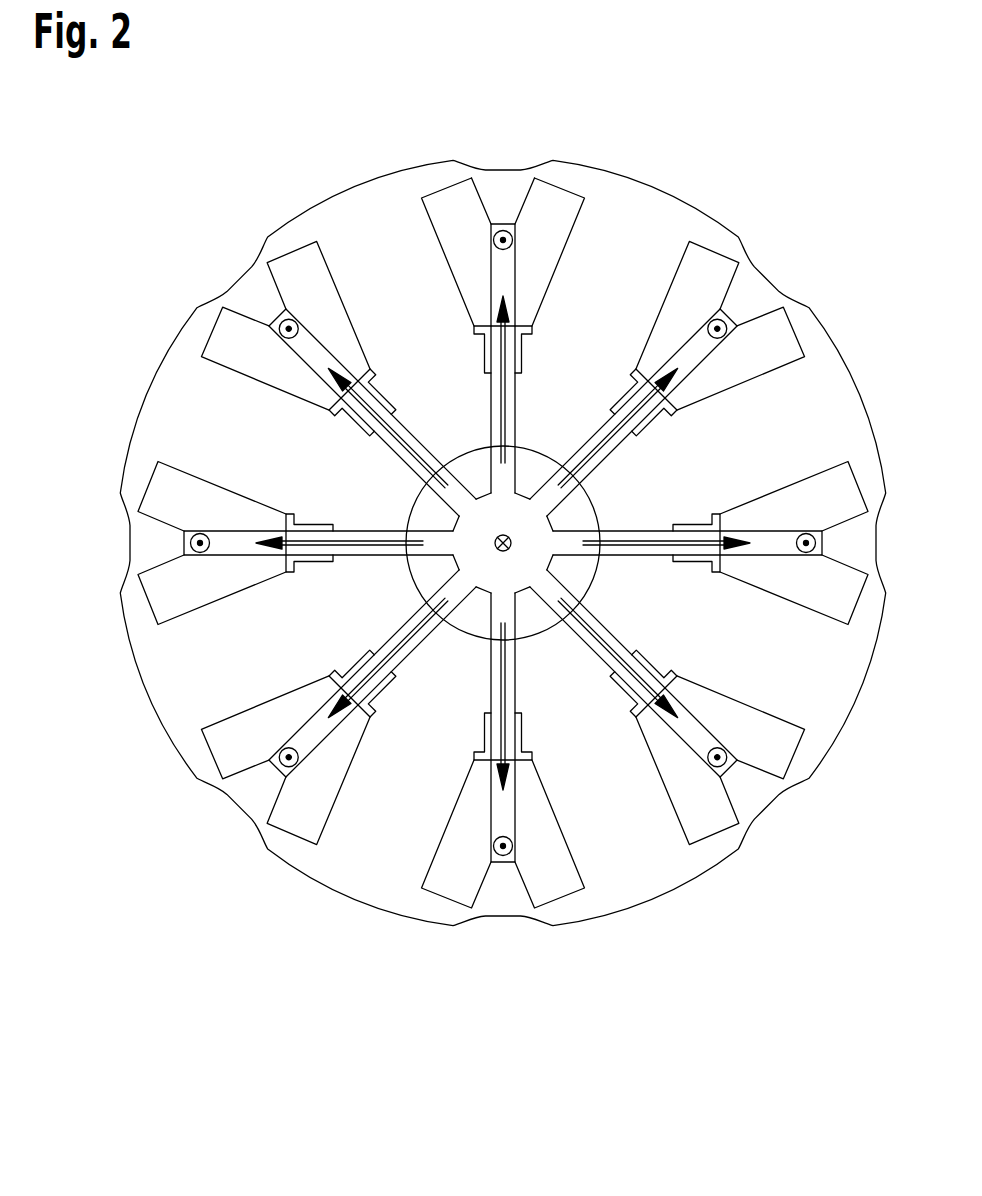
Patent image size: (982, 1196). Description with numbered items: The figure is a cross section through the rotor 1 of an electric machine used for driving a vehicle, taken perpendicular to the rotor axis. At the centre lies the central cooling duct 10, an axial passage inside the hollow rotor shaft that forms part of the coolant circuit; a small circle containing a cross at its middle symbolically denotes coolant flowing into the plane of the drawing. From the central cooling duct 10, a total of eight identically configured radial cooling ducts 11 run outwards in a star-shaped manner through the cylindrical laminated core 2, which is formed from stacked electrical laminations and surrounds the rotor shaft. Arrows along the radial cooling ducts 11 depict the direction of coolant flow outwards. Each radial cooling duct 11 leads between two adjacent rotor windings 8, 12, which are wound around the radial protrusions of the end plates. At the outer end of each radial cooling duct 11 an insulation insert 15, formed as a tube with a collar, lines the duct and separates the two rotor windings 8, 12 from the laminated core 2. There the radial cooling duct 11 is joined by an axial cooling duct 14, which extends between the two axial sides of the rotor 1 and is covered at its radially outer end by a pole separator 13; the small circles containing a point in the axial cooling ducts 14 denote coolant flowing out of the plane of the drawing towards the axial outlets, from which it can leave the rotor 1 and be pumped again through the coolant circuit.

The rotor 1 is at (485, 561).
The laminated core 2 is at (653, 233).
The rotor winding 8 is at (460, 217).
The central cooling duct 10 is at (487, 587).
The radial cooling duct 11 is at (497, 397).
The rotor winding 12 is at (548, 213).
The pole separator 13 is at (500, 197).
The axial cooling duct 14 is at (503, 270).
The insulation insert 15 is at (524, 348).